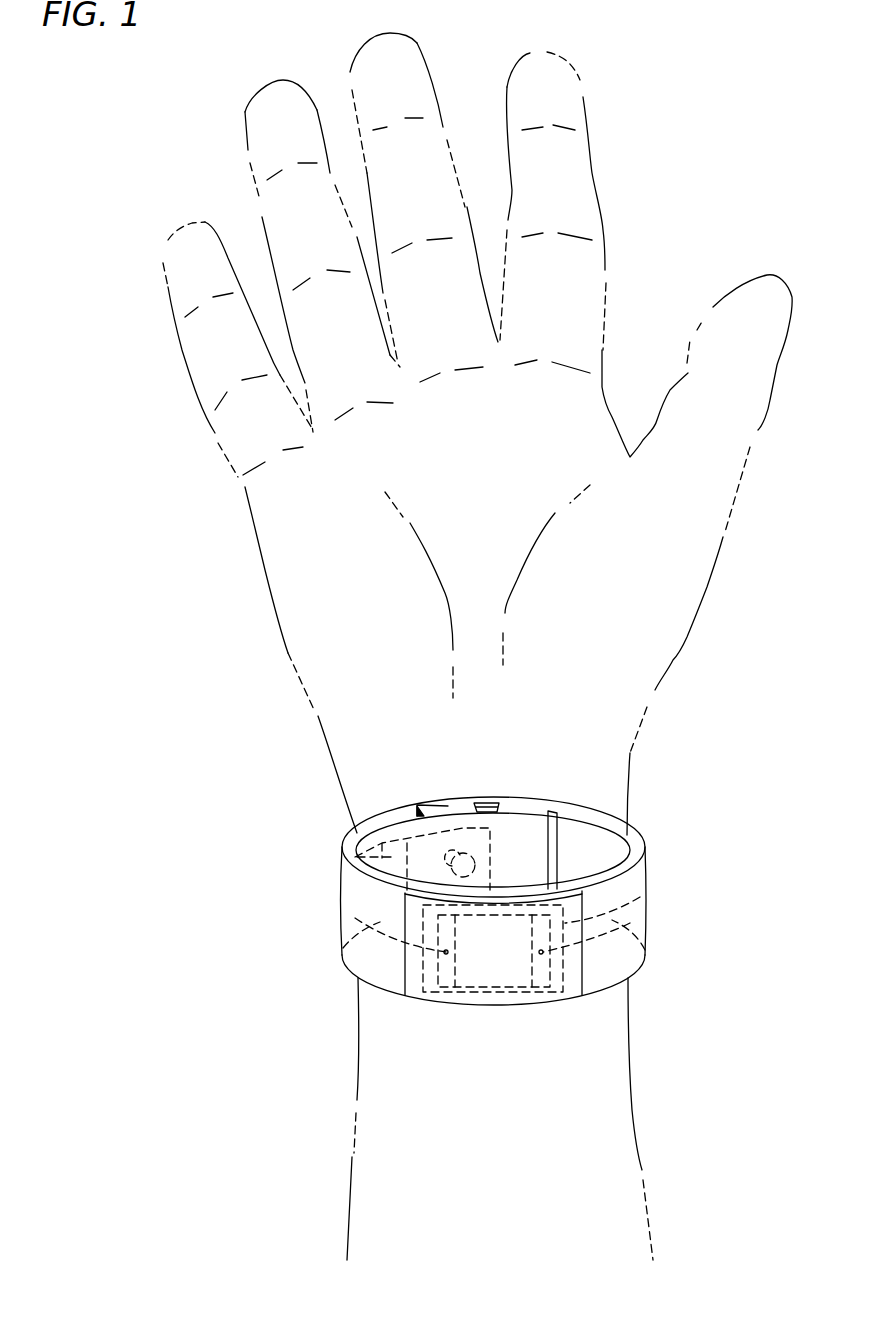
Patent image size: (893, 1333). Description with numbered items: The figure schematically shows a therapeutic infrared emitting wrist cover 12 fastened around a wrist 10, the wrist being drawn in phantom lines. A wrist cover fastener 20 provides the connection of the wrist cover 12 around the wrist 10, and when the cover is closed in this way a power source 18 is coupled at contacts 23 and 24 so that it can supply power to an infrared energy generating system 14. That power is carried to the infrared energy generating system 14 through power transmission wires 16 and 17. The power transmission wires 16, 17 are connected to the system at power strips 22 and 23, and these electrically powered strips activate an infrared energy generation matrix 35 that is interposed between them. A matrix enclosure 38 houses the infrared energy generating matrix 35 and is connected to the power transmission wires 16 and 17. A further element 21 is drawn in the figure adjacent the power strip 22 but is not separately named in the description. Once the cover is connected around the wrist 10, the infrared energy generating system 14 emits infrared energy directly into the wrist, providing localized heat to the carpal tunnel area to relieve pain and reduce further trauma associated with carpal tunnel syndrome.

The wrist 10 is at (363, 1063).
The infrared emitting wrist cover 12 is at (650, 838).
The infrared energy generating system 14 is at (413, 977).
The power transmission wire 16 is at (645, 950).
The power transmission wire 17 is at (342, 947).
The power source 18 is at (340, 847).
The wrist cover fastener 20 is at (483, 801).
The fastener 21 is at (542, 997).
The power strip 22 is at (450, 1007).
The contact 23 is at (462, 830).
The contact 24 is at (452, 858).
The infrared energy generating matrix 35 is at (485, 977).
The matrix enclosure 38 is at (640, 897).